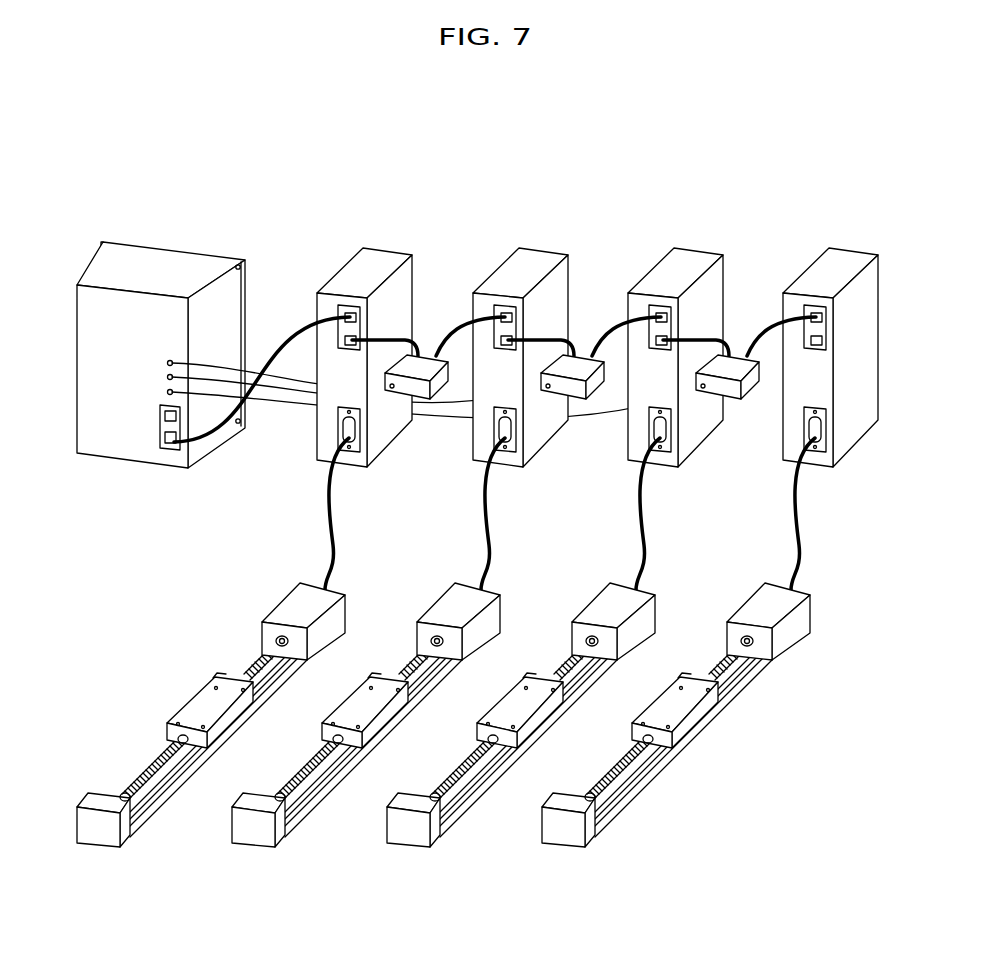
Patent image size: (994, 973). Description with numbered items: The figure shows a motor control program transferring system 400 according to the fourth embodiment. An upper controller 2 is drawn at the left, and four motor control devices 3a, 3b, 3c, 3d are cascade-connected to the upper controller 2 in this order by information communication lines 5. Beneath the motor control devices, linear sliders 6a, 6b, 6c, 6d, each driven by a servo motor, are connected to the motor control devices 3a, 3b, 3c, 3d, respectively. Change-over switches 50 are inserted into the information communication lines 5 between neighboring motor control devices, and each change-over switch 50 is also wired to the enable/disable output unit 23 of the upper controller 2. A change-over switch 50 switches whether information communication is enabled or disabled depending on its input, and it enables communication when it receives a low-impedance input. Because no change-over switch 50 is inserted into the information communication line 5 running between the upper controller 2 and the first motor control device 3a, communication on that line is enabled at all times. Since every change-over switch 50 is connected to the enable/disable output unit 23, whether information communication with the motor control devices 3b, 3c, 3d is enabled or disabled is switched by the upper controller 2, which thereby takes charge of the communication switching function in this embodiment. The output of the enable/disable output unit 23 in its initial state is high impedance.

The upper controller 2 is at (172, 246).
The motor control device 3a is at (372, 248).
The motor control device 3b is at (525, 392).
The motor control device 3c is at (679, 392).
The motor control device 3d is at (835, 392).
The information communication line 5 is at (298, 332).
The linear slider 6a is at (100, 847).
The linear slider 6b is at (366, 745).
The linear slider 6c is at (521, 745).
The linear slider 6d is at (676, 745).
The enable/disable output unit 23 is at (160, 360).
The change-over switch 50 is at (415, 402).
The motor control program transferring system 400 is at (702, 882).